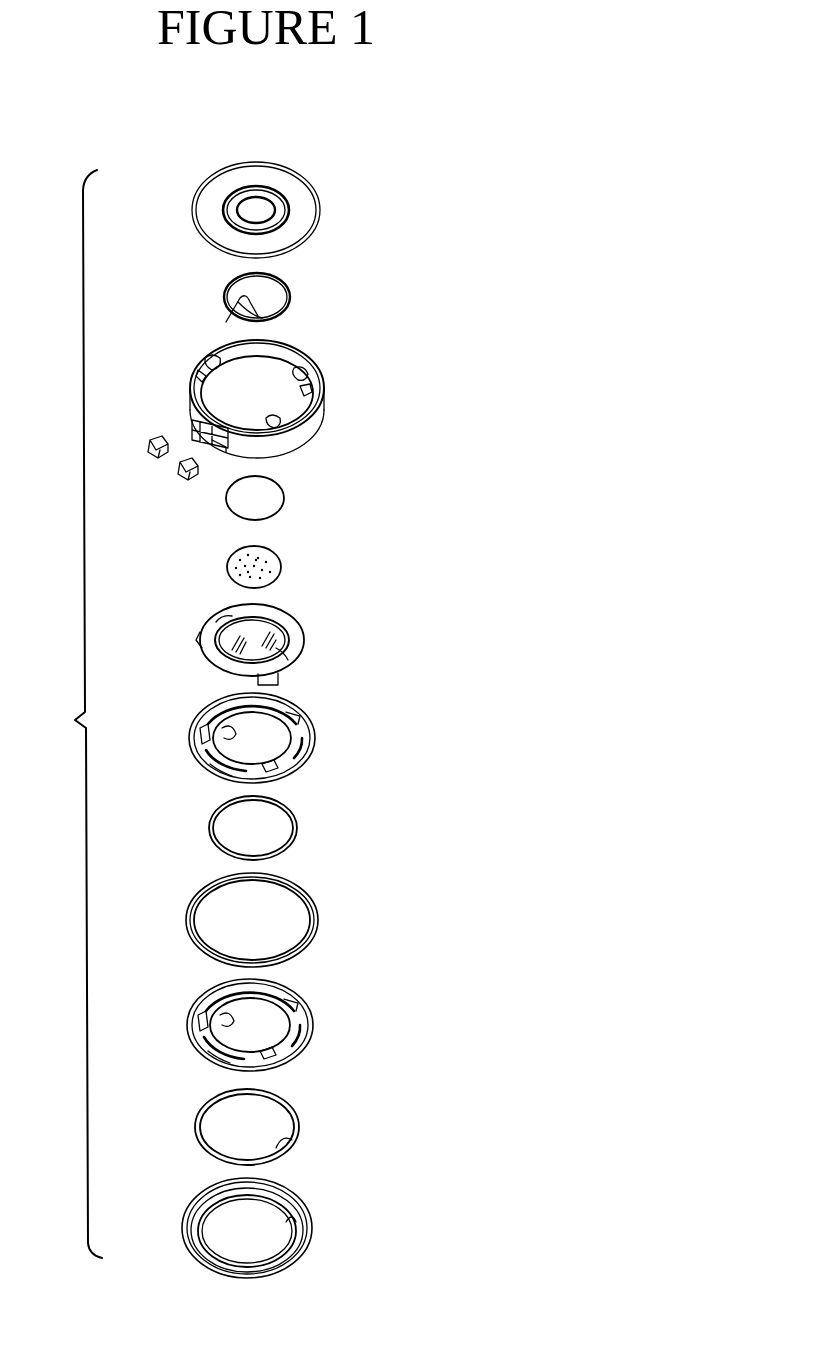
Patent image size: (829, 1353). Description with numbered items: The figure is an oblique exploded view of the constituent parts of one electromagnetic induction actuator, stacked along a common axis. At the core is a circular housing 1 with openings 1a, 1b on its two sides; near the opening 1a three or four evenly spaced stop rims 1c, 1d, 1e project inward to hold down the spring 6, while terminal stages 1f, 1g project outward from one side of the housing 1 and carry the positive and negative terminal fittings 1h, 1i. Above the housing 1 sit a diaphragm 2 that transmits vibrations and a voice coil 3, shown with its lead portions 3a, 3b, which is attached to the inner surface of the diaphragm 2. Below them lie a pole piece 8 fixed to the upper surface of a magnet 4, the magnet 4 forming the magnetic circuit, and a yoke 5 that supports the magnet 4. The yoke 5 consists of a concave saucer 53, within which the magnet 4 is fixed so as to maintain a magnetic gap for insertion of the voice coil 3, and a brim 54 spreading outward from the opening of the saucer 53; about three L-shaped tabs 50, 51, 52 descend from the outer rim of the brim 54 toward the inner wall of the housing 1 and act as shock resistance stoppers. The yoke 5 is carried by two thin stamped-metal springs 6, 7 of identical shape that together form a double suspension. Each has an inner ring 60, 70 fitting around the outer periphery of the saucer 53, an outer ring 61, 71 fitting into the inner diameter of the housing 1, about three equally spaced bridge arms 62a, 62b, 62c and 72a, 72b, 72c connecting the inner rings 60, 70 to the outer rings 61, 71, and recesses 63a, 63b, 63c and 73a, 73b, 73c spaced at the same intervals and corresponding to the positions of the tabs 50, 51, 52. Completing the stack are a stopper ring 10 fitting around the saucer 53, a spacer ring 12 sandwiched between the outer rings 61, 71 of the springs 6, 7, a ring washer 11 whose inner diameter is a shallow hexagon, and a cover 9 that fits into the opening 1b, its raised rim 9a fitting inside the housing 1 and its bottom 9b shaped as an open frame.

The housing 1 is at (328, 405).
The opening 1a is at (200, 374).
The opening 1b is at (307, 388).
The stop rim 1c is at (300, 372).
The stop rim 1d is at (280, 425).
The stop rim 1e is at (210, 360).
The terminal stage 1f is at (195, 430).
The terminal stage 1g is at (222, 452).
The terminal fitting 1h is at (150, 442).
The terminal fitting 1i is at (180, 468).
The diaphragm 2 is at (298, 168).
The voice coil 3 is at (296, 280).
The ring member hook portion 3a is at (228, 322).
The ring member hook portion 3b is at (258, 318).
The magnet 4 is at (282, 558).
The yoke 5 is at (310, 642).
The tab 50 is at (292, 616).
The tab 51 is at (284, 680).
The tab 52 is at (200, 638).
The saucer 53 is at (278, 652).
The brim 54 is at (222, 618).
The spring 6 is at (320, 740).
The inner ring 60 is at (230, 728).
The outer ring 61 is at (212, 770).
The bridge arm 62a is at (246, 705).
The bridge arm 62b is at (300, 752).
The bridge arm 62c is at (210, 760).
The recess 63a is at (300, 712).
The recess 63b is at (272, 768).
The recess 63c is at (204, 734).
The spring 7 is at (318, 1025).
The inner ring 70 is at (228, 1014).
The outer ring 71 is at (212, 1060).
The bridge arm 72a is at (240, 992).
The bridge arm 72b is at (300, 1040).
The bridge arm 72c is at (210, 1045).
The recess 73a is at (292, 1003).
The recess 73b is at (272, 1058).
The recess 73c is at (202, 1020).
The pole piece 8 is at (276, 498).
The cover 9 is at (190, 1208).
The raised rim 9a is at (312, 1228).
The bottom 9b is at (290, 1215).
The stopper ring 10 is at (297, 835).
The ring washer 11 is at (288, 1138).
The spacer ring 12 is at (318, 925).